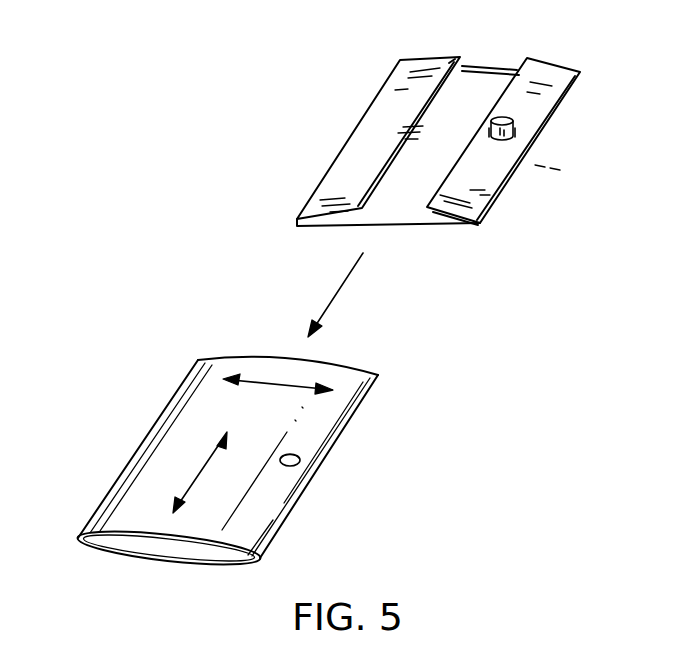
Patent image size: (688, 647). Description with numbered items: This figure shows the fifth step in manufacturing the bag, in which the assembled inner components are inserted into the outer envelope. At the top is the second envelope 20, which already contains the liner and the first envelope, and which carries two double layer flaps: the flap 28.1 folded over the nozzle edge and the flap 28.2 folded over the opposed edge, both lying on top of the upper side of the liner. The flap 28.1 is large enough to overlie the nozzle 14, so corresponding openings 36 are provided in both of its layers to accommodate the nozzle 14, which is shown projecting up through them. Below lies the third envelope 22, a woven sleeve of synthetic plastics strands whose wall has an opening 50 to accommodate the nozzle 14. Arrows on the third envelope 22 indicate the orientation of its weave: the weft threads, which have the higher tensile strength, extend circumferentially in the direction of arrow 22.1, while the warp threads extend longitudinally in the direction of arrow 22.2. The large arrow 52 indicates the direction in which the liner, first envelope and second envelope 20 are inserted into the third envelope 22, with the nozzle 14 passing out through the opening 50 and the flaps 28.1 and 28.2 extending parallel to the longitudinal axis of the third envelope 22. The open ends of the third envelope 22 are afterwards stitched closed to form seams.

The second envelope 20 is at (492, 66).
The nozzle 14 is at (513, 136).
The openings 36 is at (518, 117).
The double layer flap 28.1 is at (456, 227).
The double layer flap 28.2 is at (338, 227).
The arrow 52 is at (338, 290).
The third envelope 22 is at (355, 418).
The arrow 22.1 is at (265, 382).
The arrow 22.2 is at (197, 475).
The opening 50 is at (300, 466).